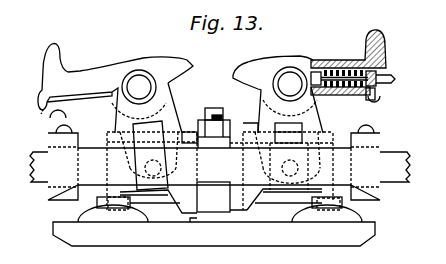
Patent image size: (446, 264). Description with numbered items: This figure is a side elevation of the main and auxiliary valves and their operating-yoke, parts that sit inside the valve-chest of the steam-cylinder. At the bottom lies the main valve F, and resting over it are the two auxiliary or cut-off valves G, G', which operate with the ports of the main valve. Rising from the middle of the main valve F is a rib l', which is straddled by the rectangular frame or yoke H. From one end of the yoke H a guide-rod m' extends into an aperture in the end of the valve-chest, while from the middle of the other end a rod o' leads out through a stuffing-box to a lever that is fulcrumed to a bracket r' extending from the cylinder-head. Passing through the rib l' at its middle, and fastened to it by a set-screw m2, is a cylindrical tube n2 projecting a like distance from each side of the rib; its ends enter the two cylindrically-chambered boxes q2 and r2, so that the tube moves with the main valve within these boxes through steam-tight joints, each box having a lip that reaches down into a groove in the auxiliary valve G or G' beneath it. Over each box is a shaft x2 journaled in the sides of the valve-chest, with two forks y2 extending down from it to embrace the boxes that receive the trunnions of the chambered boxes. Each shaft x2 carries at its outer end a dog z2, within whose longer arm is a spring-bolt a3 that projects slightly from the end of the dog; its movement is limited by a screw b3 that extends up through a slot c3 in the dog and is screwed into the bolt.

The yoke H is at (214, 162).
The rod o' is at (39, 167).
The guide-rod m' is at (395, 167).
The dog z2 is at (212, 81).
The shaft x2 is at (214, 85).
The fork y2 is at (225, 153).
The bracket r' is at (189, 137).
The set-screw m2 is at (214, 121).
The cylindrical tube n2 is at (248, 125).
The spring-bolt a3 is at (397, 79).
The screw b3 is at (223, 110).
The slot c3 is at (366, 100).
The rib l' is at (218, 202).
The cylindrically-chambered box r2 is at (147, 201).
The cylindrically-chambered box q2 is at (294, 167).
The auxiliary valve G is at (113, 215).
The auxiliary valve G' is at (327, 215).
The main valve F is at (223, 246).